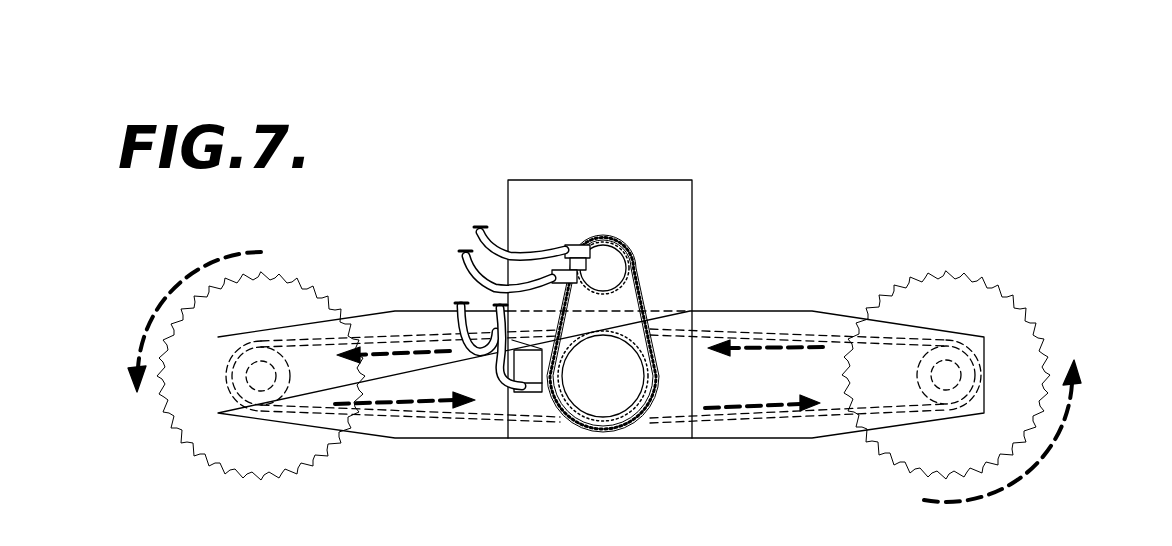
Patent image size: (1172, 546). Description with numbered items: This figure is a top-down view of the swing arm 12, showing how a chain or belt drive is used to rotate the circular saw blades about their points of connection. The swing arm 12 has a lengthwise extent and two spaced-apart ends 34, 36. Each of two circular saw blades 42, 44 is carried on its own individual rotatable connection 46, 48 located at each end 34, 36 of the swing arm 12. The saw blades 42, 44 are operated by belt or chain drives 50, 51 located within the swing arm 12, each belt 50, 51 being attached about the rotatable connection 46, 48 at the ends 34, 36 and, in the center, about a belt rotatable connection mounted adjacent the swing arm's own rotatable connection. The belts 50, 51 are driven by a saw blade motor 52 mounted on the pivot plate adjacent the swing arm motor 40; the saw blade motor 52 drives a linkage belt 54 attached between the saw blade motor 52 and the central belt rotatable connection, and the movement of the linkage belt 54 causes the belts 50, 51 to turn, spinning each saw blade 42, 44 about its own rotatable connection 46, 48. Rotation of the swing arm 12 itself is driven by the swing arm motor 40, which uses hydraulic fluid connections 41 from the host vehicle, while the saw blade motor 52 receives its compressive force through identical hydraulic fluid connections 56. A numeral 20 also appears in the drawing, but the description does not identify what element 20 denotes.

The swing arm 12 is at (828, 407).
The drive housing 20 is at (600, 363).
The end of the swing arm 34 is at (230, 347).
The end of the swing arm 36 is at (978, 403).
The swing arm motor 40 is at (605, 373).
The hydraulic fluid connections 41 is at (535, 358).
The circular saw blade 42 is at (195, 438).
The circular saw blade 44 is at (1007, 308).
The rotatable connection 46 is at (265, 375).
The rotatable connection 48 is at (944, 373).
The belt or chain drive 50 is at (422, 412).
The belt or chain drive 51 is at (810, 343).
The saw blade motor 52 is at (610, 265).
The linkage belt 54 is at (647, 280).
The hydraulic fluid connections 56 is at (555, 277).